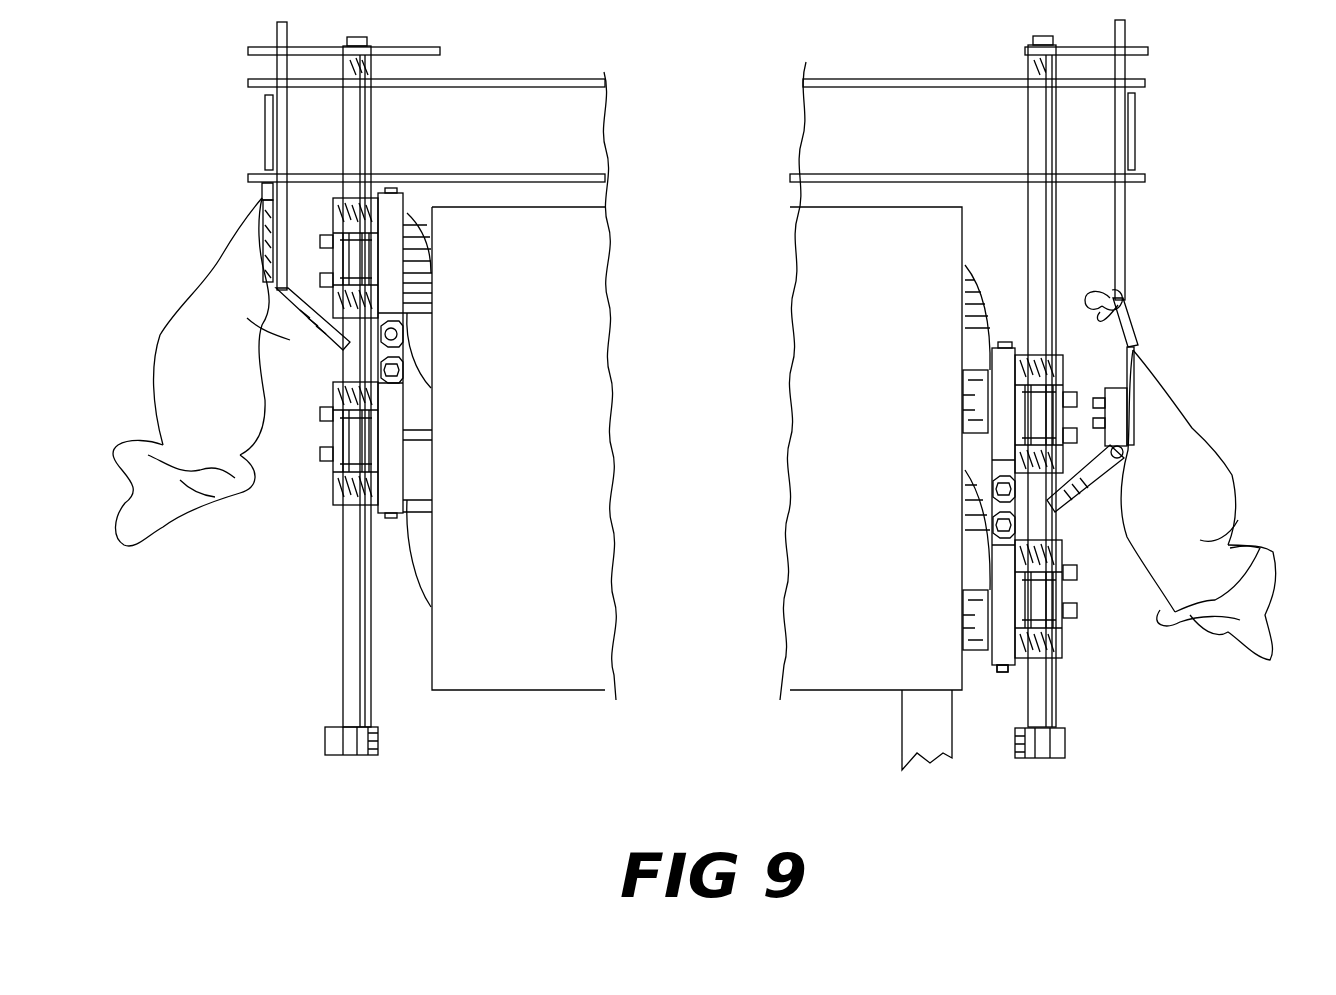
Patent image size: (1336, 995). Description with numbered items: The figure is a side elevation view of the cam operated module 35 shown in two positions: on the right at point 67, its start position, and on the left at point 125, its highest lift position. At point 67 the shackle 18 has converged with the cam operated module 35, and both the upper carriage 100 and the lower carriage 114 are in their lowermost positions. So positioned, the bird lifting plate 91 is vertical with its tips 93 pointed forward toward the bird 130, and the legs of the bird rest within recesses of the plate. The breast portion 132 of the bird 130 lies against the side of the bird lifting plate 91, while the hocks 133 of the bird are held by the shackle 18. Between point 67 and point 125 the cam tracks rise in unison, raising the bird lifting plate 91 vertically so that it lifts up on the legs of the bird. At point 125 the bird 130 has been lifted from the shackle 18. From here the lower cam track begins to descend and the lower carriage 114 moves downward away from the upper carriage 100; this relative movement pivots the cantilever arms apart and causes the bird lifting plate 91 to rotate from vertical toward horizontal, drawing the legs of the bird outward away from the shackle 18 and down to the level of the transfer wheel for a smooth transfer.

The shackle 18 is at (282, 152).
The bird 130 is at (225, 272).
The cam operated module 35 is at (306, 444).
The point 125 is at (303, 523).
The upper carriage 100 is at (1016, 328).
The hocks 133 is at (1122, 288).
The tips 93 is at (1136, 342).
The bird lifting plate 91 is at (1125, 380).
The breast portion 132 is at (1228, 543).
The point 67 is at (1158, 639).
The lower carriage 114 is at (1012, 694).